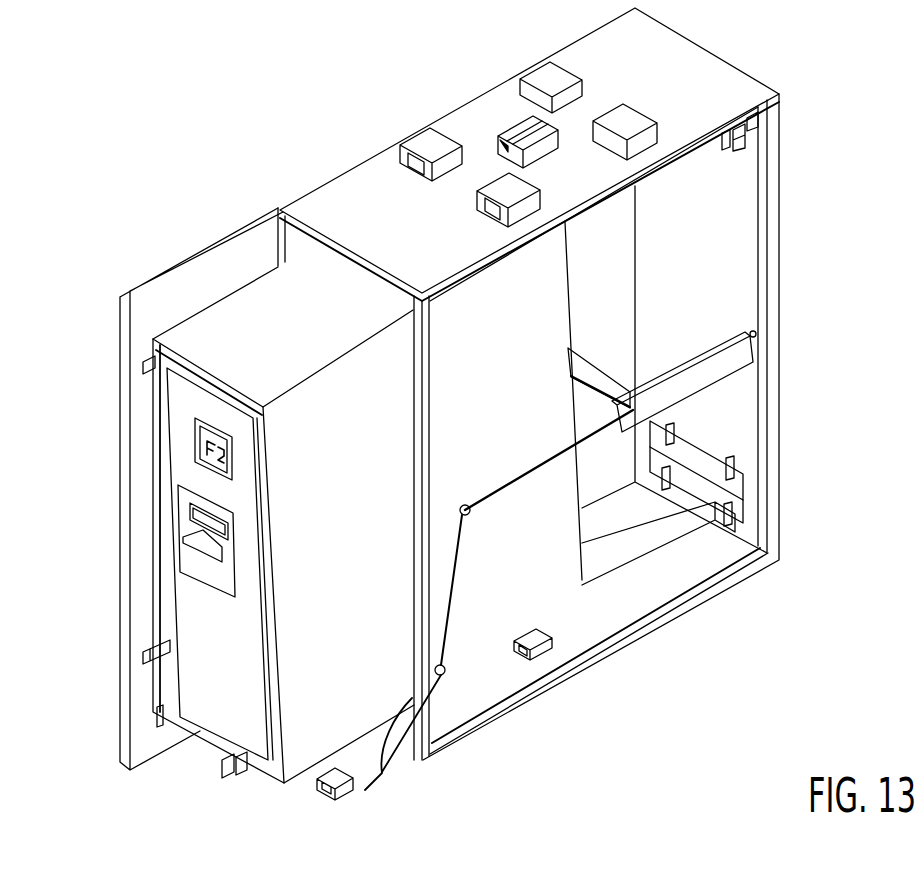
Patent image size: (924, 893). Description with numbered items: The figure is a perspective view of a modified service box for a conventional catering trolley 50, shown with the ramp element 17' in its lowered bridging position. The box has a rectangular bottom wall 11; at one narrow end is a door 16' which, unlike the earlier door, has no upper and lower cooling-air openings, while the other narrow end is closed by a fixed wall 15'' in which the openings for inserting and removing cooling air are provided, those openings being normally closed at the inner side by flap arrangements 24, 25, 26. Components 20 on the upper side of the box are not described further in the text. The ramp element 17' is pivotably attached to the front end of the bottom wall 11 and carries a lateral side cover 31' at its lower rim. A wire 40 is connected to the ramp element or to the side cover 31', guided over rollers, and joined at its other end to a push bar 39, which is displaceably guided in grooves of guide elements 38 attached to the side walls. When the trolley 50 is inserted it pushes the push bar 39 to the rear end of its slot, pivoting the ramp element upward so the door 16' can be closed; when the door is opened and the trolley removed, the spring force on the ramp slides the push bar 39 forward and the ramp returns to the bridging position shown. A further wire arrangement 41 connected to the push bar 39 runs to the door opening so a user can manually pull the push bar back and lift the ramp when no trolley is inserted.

The bottom wall 11 is at (713, 581).
The fixed wall 15'' is at (564, 384).
The door 16' is at (232, 525).
The ramp element 17' is at (353, 802).
The connection block 20 is at (508, 132).
The flap arrangement 24 is at (745, 148).
The flap arrangement 25 is at (743, 483).
The flap arrangement 26 is at (740, 510).
The side cover 31' is at (431, 566).
The guide element 38 is at (745, 357).
The push bar 39 is at (600, 384).
The wire 40 is at (450, 640).
The wire arrangement 41 is at (378, 301).
The trolley 50 is at (180, 300).